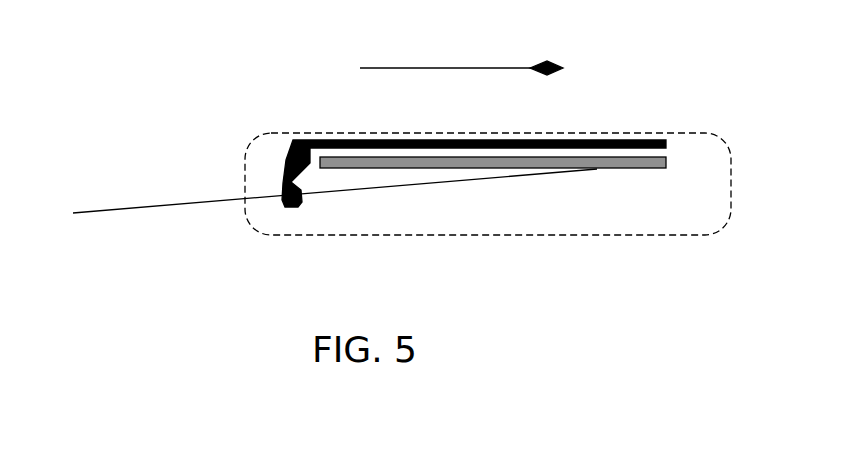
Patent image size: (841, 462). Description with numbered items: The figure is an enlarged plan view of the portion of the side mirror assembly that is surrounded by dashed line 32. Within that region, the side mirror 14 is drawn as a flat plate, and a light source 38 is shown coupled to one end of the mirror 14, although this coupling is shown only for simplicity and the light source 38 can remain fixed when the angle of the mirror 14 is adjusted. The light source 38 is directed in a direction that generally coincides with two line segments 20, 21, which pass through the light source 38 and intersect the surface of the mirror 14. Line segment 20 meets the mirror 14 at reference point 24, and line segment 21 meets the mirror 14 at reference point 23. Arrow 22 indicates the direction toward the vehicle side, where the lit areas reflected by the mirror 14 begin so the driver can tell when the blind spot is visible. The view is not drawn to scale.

The side mirror 14 is at (655, 169).
The line segment 20 is at (134, 204).
The line segment 21 is at (327, 170).
The arrow 22 is at (461, 47).
The reference point 23 is at (339, 193).
The reference point 24 is at (608, 193).
The dashed line 32 is at (281, 236).
The light source 38 is at (279, 188).